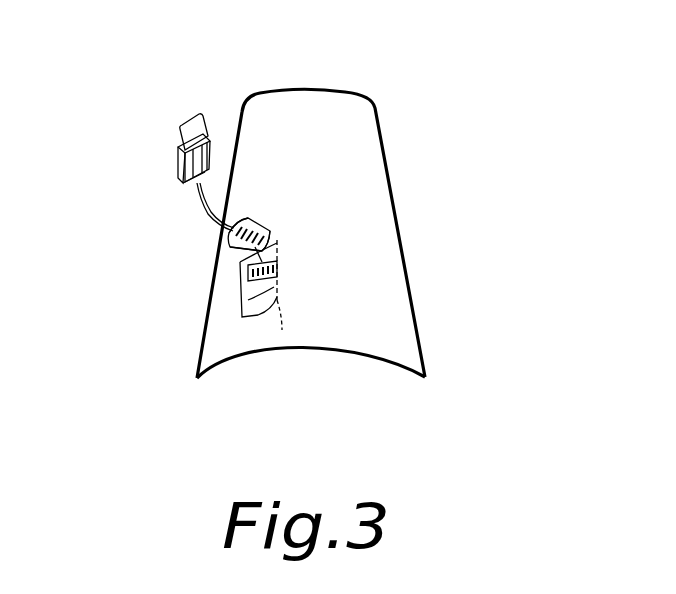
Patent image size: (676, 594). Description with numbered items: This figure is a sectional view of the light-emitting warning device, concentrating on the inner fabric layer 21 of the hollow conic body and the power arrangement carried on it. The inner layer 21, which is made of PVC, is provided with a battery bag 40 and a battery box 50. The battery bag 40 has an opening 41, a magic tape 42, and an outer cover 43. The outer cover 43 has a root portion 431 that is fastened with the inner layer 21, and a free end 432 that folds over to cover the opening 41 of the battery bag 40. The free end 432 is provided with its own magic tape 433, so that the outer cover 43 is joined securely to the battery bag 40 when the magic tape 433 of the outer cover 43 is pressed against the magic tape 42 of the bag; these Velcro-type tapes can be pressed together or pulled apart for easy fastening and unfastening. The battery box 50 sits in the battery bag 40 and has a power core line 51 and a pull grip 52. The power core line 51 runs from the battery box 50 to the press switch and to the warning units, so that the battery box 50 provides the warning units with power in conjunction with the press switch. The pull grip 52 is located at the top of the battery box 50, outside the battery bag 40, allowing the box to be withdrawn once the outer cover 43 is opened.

The inner fabric layer 21 is at (380, 108).
The battery bag 40 is at (191, 332).
The opening 41 is at (240, 288).
The magic tape 42 is at (278, 300).
The outer cover 43 is at (284, 215).
The root portion 431 is at (238, 252).
The free end 432 is at (236, 234).
The magic tape 433 is at (272, 231).
The battery box 50 is at (148, 104).
The power core line 51 is at (200, 203).
The pull grip 52 is at (188, 128).